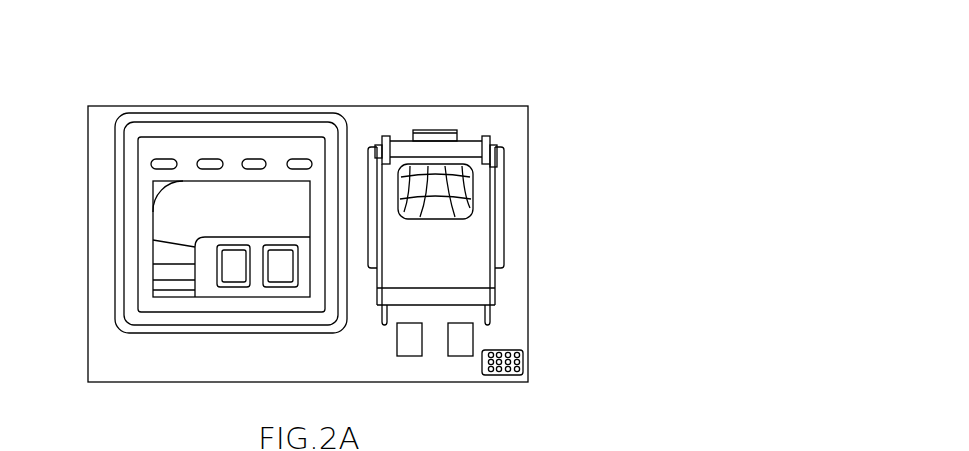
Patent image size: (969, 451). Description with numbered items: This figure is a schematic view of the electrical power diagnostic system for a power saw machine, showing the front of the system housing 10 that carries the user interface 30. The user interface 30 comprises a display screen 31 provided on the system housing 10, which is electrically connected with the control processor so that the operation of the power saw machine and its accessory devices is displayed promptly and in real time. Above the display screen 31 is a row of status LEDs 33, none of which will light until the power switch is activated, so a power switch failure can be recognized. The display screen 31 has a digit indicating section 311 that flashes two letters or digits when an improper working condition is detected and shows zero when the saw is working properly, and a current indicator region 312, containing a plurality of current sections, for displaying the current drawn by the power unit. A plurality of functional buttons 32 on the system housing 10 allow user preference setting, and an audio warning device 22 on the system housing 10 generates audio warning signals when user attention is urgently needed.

The system housing 10 is at (437, 90).
The user interface 30 is at (127, 220).
The status LEDs 33 is at (158, 147).
The display screen 31 is at (224, 197).
The current indicator region 312 is at (169, 279).
The digit indicating section 311 is at (258, 292).
The functional buttons 32 is at (412, 340).
The audio warning device 22 is at (515, 375).